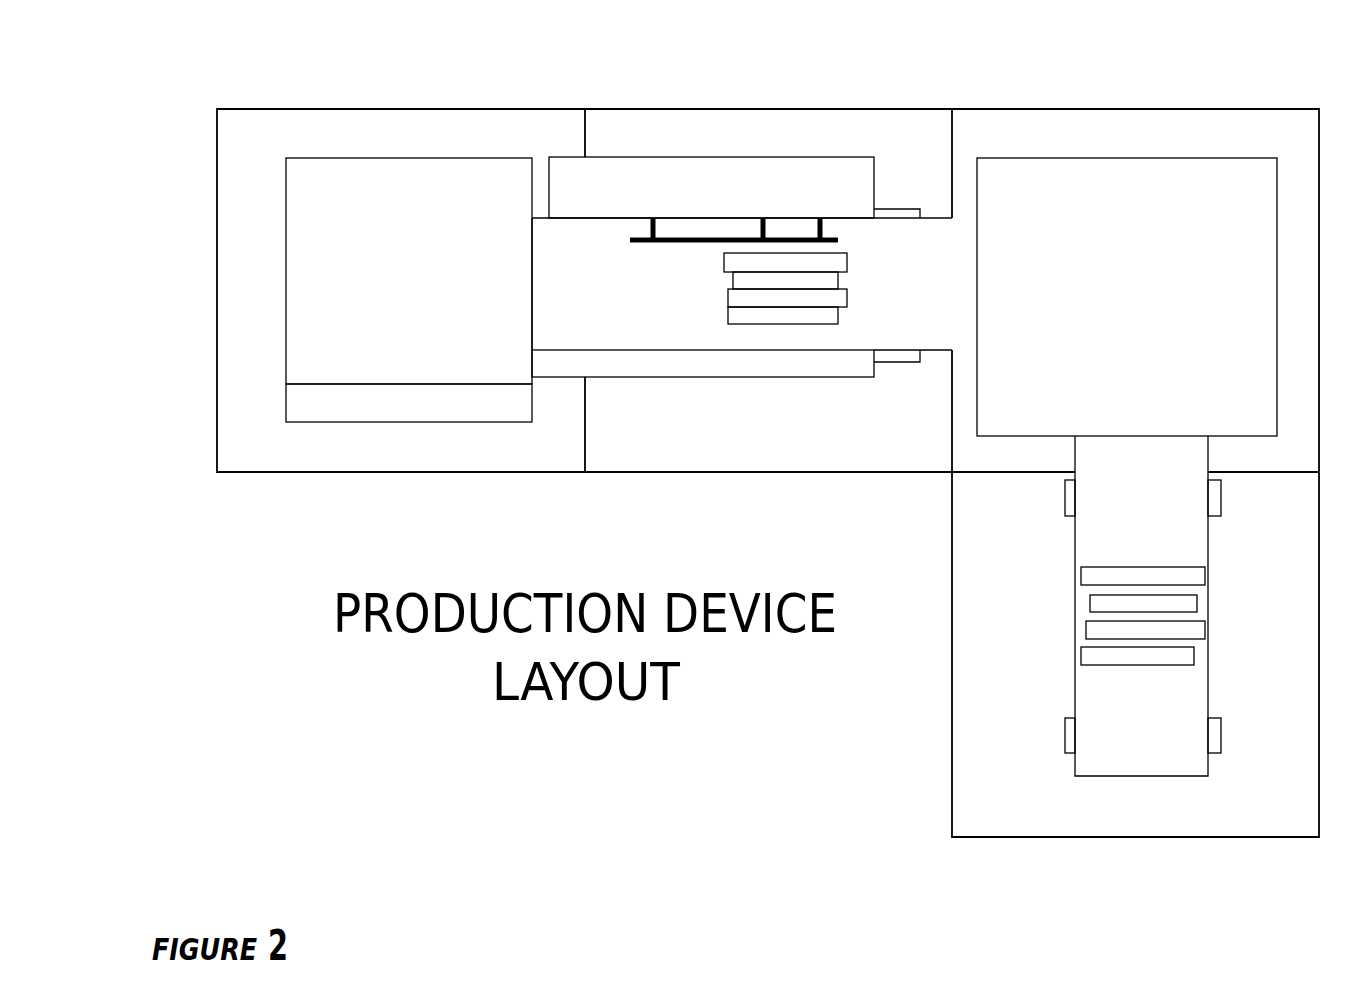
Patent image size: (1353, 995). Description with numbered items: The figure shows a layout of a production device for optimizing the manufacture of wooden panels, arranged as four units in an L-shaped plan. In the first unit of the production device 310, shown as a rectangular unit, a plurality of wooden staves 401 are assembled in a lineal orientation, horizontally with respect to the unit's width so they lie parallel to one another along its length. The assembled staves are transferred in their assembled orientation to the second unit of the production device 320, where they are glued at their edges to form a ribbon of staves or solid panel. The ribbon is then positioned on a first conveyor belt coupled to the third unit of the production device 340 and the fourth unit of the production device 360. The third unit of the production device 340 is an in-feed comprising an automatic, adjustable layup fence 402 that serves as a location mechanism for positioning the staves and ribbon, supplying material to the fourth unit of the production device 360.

The first unit of the production device 310 is at (968, 770).
The second unit of the production device 320 is at (1284, 141).
The third unit of the production device 340 is at (830, 123).
The fourth unit of the production device 360 is at (252, 141).
The wooden staves 401 is at (1200, 577).
The adjustable layup fence 402 is at (647, 243).